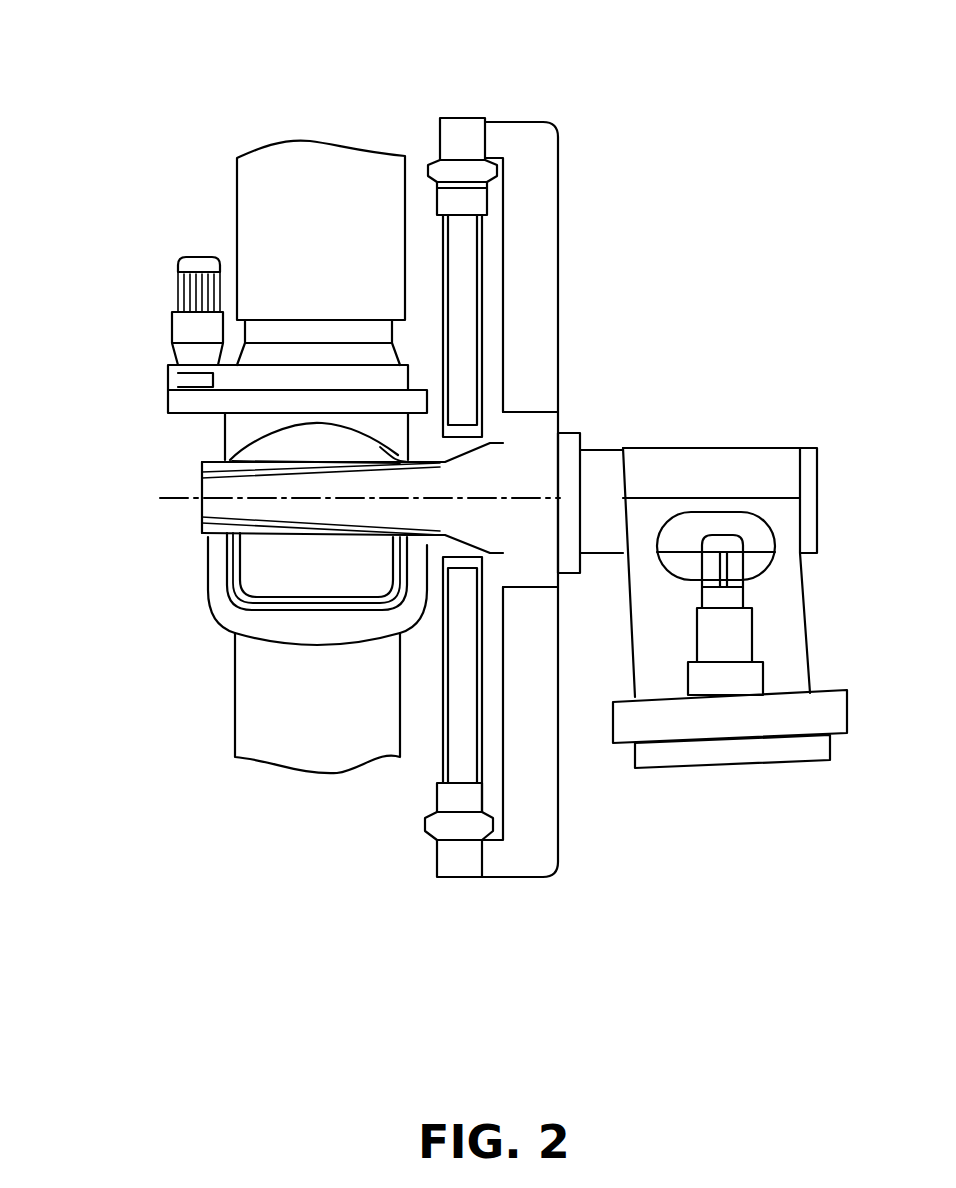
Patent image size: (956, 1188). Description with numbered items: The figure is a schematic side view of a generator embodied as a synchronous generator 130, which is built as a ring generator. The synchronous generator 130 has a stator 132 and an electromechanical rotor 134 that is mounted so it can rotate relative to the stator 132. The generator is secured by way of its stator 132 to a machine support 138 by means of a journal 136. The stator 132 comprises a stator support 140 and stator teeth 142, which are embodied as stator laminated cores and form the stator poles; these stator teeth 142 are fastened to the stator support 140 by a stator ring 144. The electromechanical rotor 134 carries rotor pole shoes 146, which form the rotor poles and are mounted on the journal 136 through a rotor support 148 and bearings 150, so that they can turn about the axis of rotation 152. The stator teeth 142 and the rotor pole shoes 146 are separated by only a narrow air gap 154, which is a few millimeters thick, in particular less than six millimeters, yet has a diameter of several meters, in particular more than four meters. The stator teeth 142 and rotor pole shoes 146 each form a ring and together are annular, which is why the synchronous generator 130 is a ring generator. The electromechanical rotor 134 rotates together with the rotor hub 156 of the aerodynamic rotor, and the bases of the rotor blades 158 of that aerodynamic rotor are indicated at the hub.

The synchronous generator 130 is at (645, 80).
The stator 132 is at (592, 190).
The electromechanical rotor 134 is at (412, 230).
The journal 136 is at (307, 503).
The machine support 138 is at (712, 470).
The stator support 140 is at (543, 326).
The stator teeth 142 is at (445, 165).
The stator ring 144 is at (462, 135).
The rotor pole shoes 146 is at (478, 798).
The rotor support 148 is at (472, 273).
The bearings 150 is at (227, 467).
The axis of rotation 152 is at (168, 498).
The air gap 154 is at (412, 803).
The rotor hub 156 is at (280, 613).
The rotor blades 158 is at (267, 230).